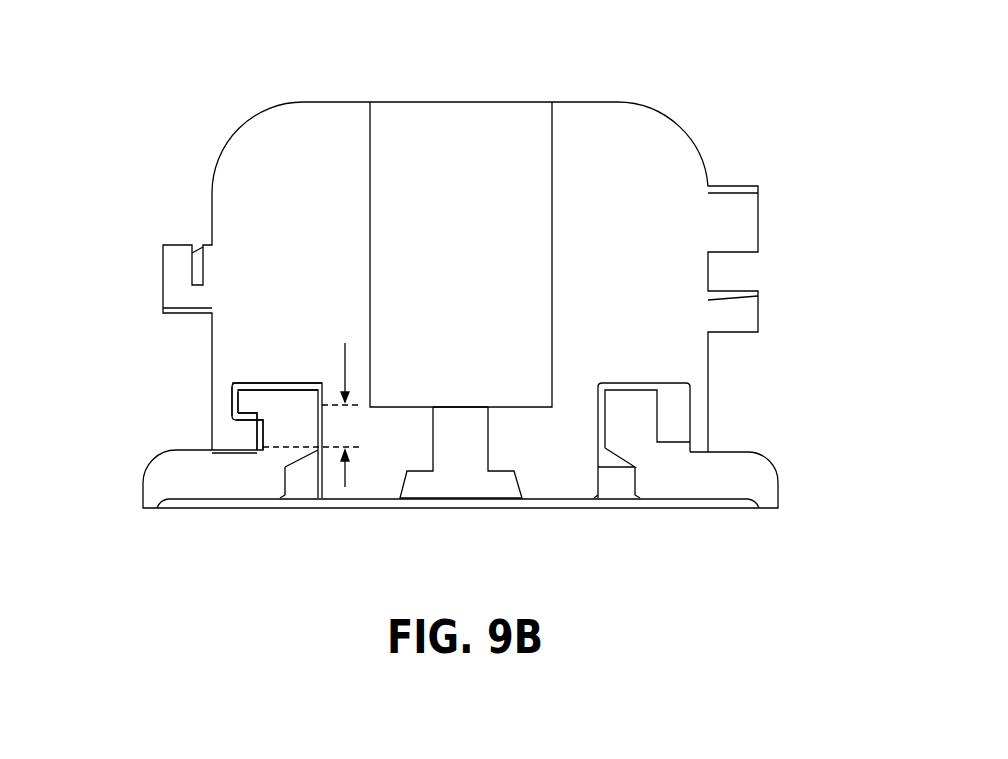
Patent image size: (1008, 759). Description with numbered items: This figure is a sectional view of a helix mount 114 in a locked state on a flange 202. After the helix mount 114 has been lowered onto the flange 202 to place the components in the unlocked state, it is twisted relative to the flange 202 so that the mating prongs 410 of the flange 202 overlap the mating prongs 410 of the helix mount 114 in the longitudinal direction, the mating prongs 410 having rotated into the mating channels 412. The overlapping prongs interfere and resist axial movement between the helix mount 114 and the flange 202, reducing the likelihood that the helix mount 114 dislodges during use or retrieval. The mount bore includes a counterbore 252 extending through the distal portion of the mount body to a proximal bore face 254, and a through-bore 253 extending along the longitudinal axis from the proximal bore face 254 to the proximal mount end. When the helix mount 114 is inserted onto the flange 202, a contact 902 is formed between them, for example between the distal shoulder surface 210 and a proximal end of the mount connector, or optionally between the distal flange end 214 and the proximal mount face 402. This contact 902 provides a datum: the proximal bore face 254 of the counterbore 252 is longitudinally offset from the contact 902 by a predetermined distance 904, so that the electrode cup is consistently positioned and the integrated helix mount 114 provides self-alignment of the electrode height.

The helix mount 114 is at (665, 162).
The counterbore 252 is at (508, 187).
The through-bore 253 is at (453, 455).
The proximal bore face 254 is at (507, 405).
The flange 202 is at (778, 480).
The distal shoulder surface 210 is at (725, 448).
The distal flange end 214 is at (205, 324).
The proximal mount face 402 is at (307, 390).
The mating prongs 410 is at (247, 407).
The mating channels 412 is at (233, 388).
The contact 902 is at (222, 458).
The predetermined distance 904 is at (347, 473).